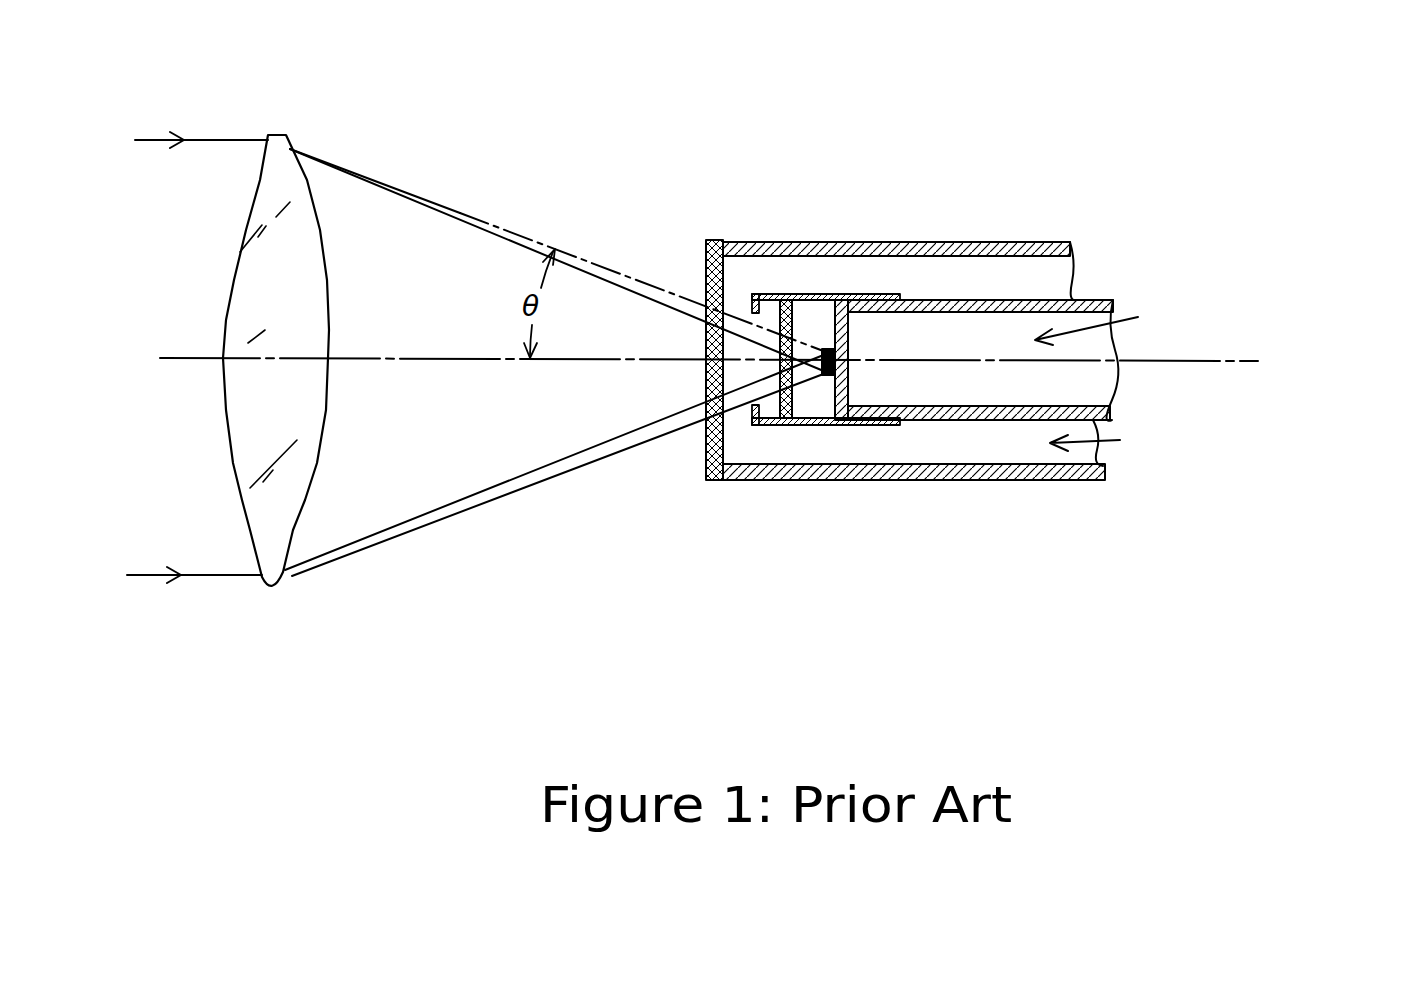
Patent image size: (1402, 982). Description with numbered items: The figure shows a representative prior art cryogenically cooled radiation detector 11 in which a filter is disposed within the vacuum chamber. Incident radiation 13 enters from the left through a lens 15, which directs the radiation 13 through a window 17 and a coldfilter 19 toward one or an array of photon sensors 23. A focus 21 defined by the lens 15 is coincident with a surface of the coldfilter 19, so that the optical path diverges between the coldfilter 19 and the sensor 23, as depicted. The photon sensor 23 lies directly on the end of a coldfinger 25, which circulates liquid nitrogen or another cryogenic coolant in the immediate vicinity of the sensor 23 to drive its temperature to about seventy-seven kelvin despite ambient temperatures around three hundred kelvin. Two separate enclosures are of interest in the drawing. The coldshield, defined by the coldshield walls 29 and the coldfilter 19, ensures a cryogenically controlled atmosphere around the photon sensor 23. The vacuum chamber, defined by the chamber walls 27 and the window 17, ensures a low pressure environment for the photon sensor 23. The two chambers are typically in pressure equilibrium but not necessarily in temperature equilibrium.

The prior art cooled detector 11 is at (447, 701).
The incident radiation 13 is at (167, 365).
The lens 15 is at (300, 150).
The window 17 is at (712, 270).
The coldfilter 19 is at (812, 322).
The focus 21 is at (825, 350).
The photon sensor 23 is at (817, 405).
The coldfinger 25 is at (1047, 310).
The chamber walls 27 is at (1068, 475).
The coldshield walls 29 is at (857, 446).